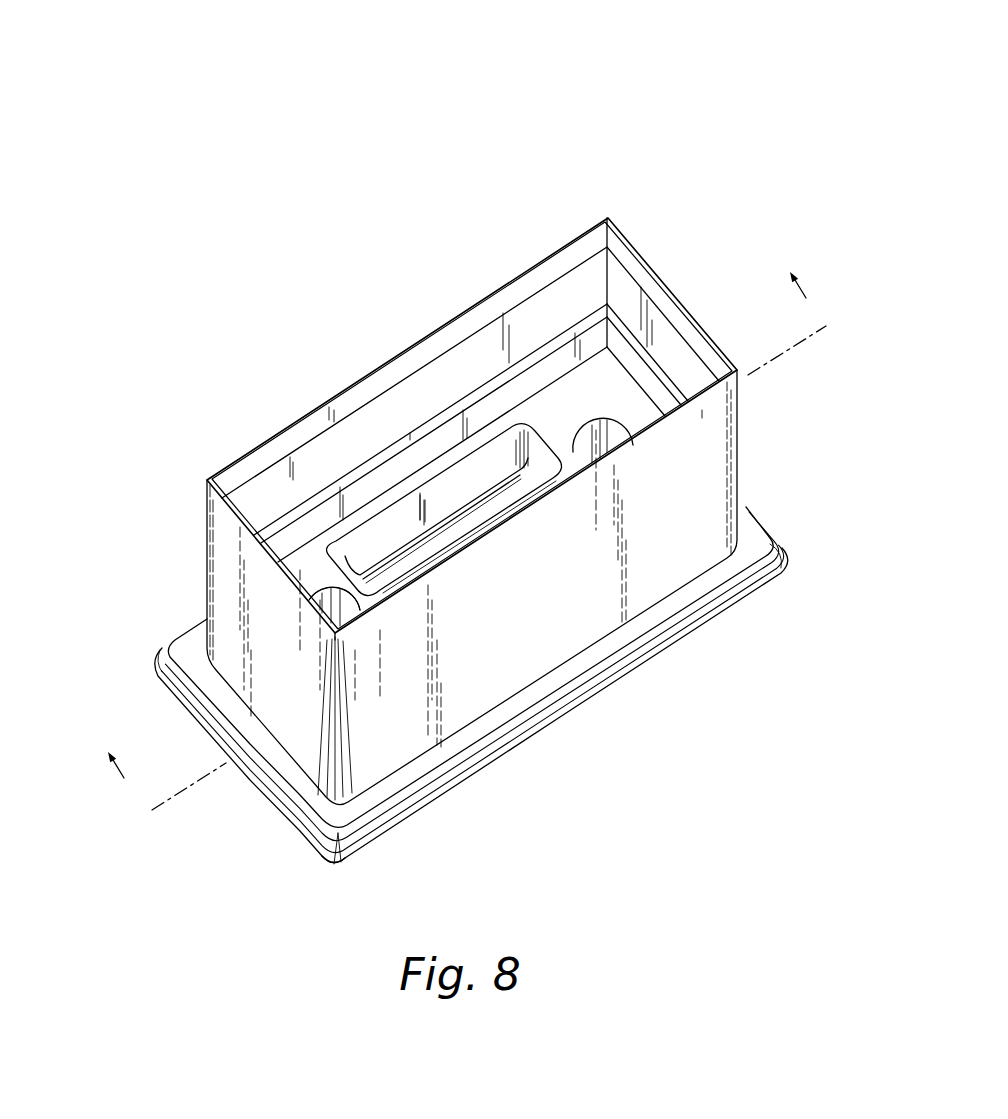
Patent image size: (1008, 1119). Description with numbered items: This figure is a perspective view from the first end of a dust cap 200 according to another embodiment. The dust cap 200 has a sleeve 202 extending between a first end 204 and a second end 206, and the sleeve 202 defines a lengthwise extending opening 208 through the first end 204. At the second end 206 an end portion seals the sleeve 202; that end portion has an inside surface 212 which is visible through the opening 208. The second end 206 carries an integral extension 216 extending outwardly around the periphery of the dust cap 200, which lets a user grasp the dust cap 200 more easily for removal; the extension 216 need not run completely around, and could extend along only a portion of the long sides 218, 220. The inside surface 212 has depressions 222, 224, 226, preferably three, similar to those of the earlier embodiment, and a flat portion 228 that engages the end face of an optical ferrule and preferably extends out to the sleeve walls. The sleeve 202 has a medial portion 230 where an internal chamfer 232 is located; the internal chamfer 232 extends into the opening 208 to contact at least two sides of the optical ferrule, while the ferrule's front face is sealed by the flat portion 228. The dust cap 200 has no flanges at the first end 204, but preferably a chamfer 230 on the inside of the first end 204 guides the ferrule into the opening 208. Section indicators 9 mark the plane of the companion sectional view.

The dust cap 200 is at (717, 124).
The sleeve 202 is at (742, 443).
The first end 204 is at (183, 484).
The second end 206 is at (332, 868).
The opening 208 is at (494, 340).
The inside surface 212 is at (583, 395).
The extension 216 is at (792, 547).
The long side 218 is at (522, 615).
The long side 220 is at (349, 380).
The depression 222 is at (447, 534).
The depression 224 is at (614, 430).
The depression 226 is at (338, 607).
The flat portion 228 is at (292, 582).
The medial portion 230 is at (431, 346).
The internal chamfer 232 is at (612, 305).
The section line 9- 9 is at (470, 534).